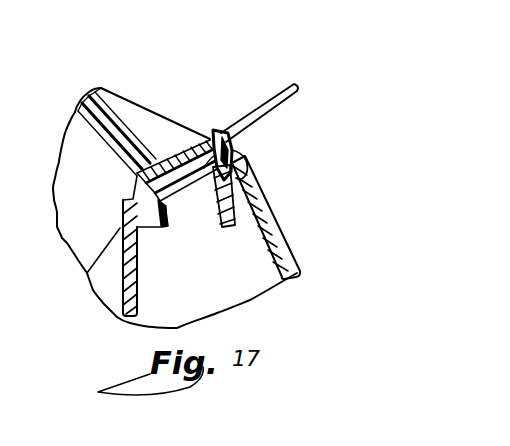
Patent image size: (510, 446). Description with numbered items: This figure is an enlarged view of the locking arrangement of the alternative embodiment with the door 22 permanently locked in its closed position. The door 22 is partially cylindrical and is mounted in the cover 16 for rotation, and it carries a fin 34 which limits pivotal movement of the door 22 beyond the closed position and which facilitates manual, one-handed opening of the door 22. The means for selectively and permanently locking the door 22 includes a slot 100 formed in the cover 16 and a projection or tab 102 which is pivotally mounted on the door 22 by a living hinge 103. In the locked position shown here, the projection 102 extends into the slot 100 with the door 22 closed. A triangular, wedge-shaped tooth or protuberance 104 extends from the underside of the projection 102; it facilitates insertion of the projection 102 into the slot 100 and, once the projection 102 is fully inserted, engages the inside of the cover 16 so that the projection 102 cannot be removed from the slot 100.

The cover 16 is at (293, 242).
The door 22 is at (105, 127).
The fin 34 is at (281, 86).
The slot 100 is at (242, 148).
The projection 102 is at (233, 224).
The living hinge 103 is at (218, 128).
The protuberance 104 is at (210, 186).